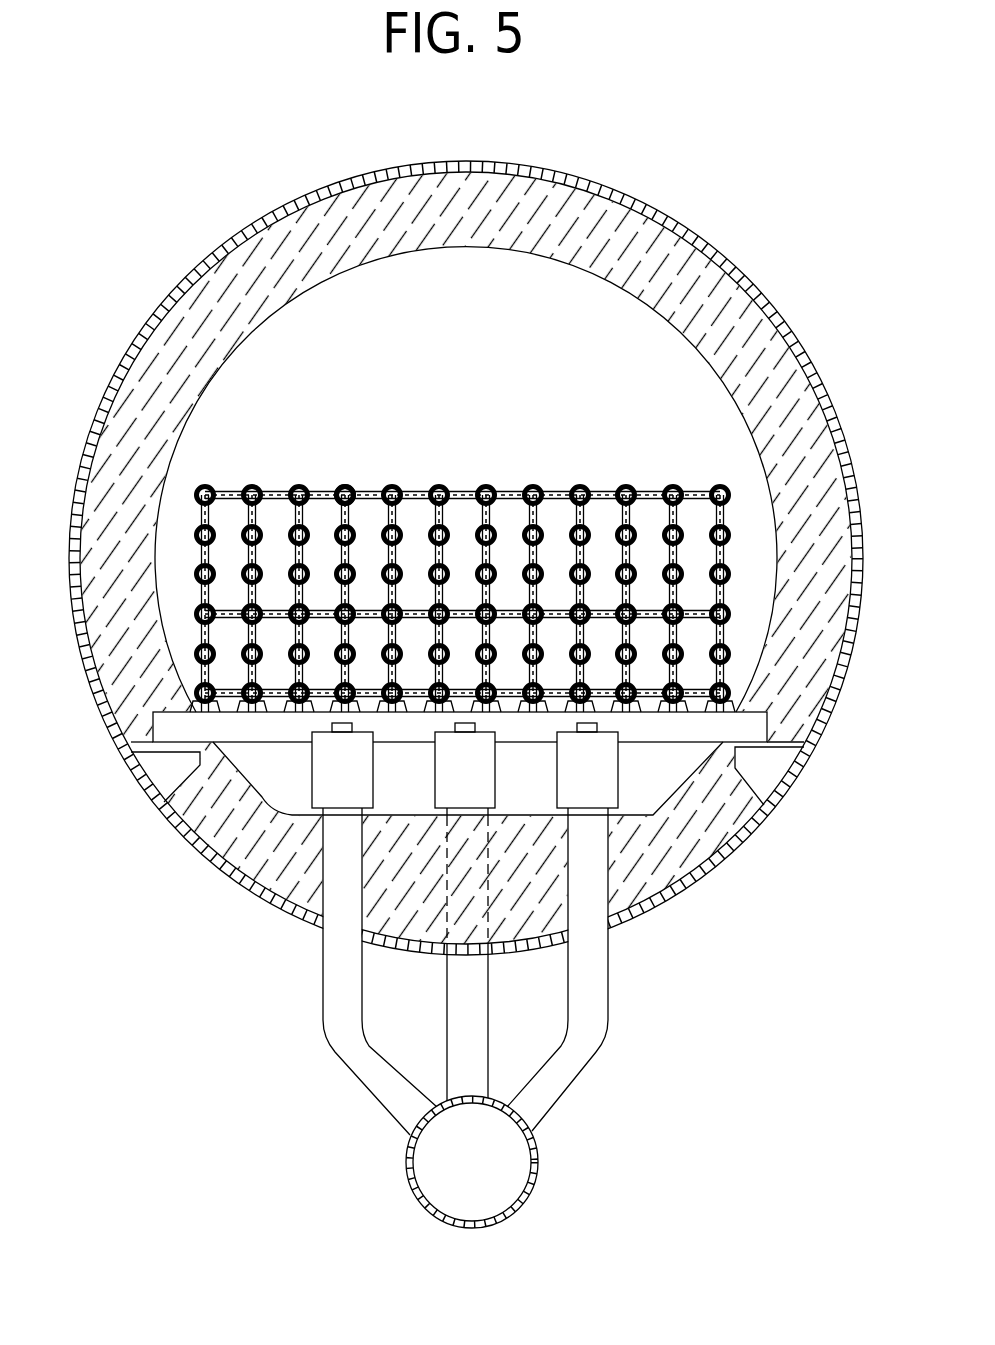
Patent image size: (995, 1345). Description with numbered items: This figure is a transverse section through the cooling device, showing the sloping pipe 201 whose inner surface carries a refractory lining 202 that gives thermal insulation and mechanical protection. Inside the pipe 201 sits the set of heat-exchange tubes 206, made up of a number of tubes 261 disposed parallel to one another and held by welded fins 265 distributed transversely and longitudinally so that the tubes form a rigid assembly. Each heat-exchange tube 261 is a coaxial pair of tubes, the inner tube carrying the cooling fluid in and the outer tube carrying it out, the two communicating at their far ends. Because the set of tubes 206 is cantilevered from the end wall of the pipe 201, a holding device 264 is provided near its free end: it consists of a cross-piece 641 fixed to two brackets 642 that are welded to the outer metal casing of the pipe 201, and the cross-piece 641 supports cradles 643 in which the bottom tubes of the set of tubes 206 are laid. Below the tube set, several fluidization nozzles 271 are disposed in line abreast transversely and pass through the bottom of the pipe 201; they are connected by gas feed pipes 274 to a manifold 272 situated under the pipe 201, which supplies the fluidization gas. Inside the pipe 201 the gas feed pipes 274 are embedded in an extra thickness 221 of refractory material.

The pipe 201 is at (653, 210).
The refractory lining 202 is at (693, 255).
The set of heat-exchange tubes 206 is at (342, 484).
The extra thickness of refractory material 221 is at (415, 888).
The heat-exchange tube 261 is at (578, 485).
The holding device 264 is at (296, 713).
The welded fins 265 is at (710, 503).
The fluidization nozzles 271 is at (361, 778).
The manifold 272 is at (437, 1145).
The gas feed pipes 274 is at (328, 878).
The cross-piece 641 is at (183, 721).
The brackets 642 is at (167, 762).
The cradles 643 is at (700, 712).